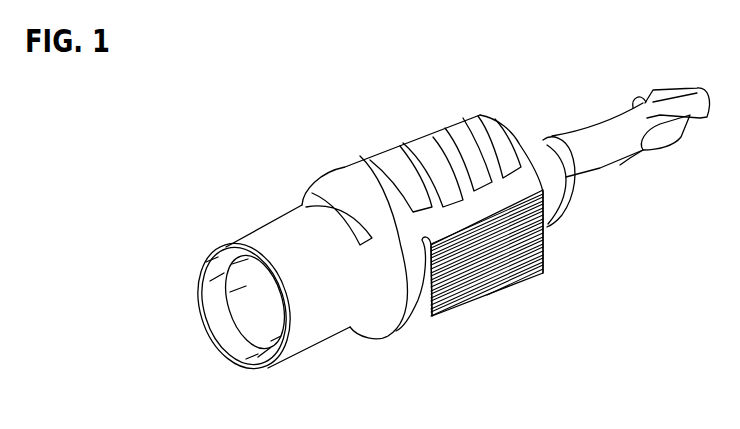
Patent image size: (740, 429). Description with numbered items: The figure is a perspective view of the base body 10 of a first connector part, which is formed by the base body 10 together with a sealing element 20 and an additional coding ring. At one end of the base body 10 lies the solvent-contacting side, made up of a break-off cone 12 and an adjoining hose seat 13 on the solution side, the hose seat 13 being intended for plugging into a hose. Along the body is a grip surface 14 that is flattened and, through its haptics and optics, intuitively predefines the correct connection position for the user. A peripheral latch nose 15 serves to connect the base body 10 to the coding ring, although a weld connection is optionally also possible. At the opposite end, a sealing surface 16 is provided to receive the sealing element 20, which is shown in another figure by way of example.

The base body 10 is at (340, 125).
The break-off cone 12 is at (595, 165).
The hose seat 13 is at (575, 182).
The grip surface 14 is at (495, 273).
The peripheral latch nose 15 is at (348, 218).
The sealing surface 16 is at (237, 323).
The sealing element 20 is at (593, 415).